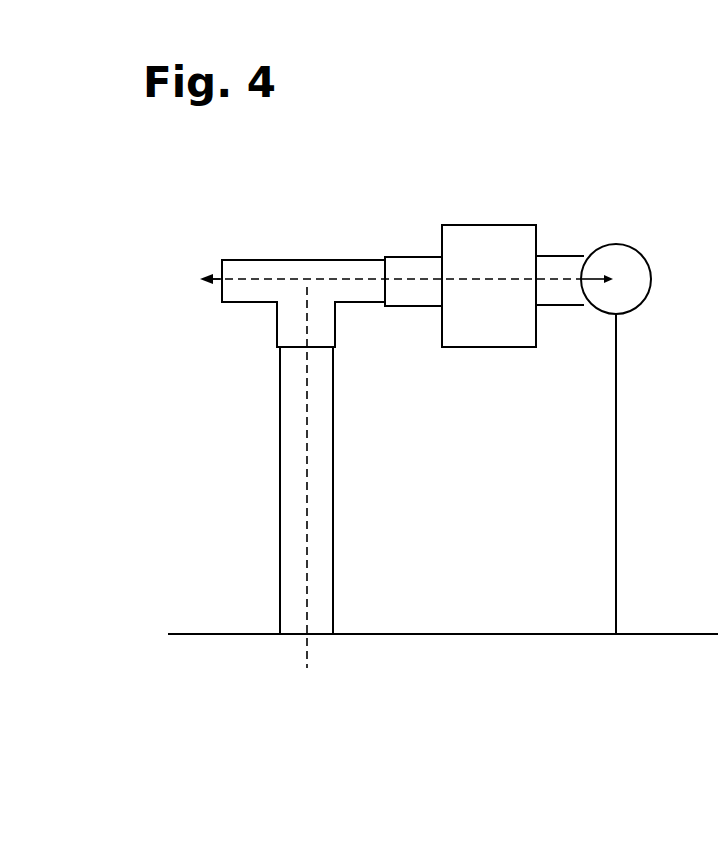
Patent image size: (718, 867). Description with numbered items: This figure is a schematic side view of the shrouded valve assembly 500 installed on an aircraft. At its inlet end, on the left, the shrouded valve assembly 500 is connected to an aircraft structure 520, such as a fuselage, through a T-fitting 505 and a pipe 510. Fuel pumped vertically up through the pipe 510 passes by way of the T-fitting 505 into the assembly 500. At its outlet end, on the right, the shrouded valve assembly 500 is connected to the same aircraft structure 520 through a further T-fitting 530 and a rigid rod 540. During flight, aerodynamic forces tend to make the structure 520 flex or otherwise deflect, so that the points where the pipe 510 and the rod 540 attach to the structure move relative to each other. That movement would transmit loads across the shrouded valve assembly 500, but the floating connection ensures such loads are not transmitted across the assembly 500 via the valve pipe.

The shrouded valve assembly 500 is at (428, 207).
The T-fitting 505 is at (297, 257).
The pipe 510 is at (285, 494).
The aircraft structure 520 is at (503, 633).
The T-fitting 530 is at (608, 250).
The rigid rod 540 is at (617, 491).